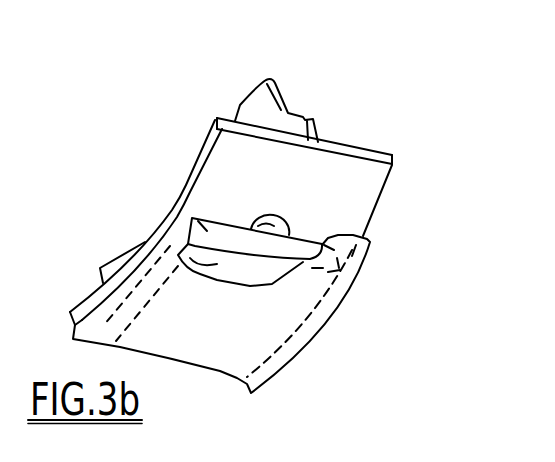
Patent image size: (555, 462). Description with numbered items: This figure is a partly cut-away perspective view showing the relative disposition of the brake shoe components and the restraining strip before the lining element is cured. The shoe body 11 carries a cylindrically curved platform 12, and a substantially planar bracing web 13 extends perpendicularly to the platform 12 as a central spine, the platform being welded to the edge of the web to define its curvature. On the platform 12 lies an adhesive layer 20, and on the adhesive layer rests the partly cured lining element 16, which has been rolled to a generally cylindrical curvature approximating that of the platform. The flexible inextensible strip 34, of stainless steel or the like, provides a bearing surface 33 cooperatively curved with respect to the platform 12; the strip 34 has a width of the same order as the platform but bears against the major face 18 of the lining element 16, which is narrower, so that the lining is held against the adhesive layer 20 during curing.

The shoe body 11 is at (224, 96).
The platform 12 is at (199, 155).
The bracing web 13 is at (283, 91).
The lining element 16 is at (196, 222).
The major face 18 is at (185, 246).
The adhesive layer 20 is at (322, 163).
The bearing surface 33 is at (340, 236).
The flexible inextensible strip 34 is at (351, 279).